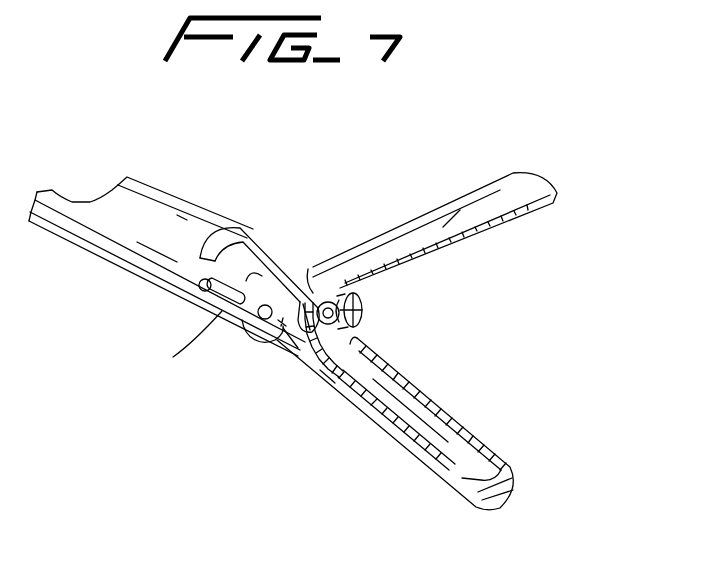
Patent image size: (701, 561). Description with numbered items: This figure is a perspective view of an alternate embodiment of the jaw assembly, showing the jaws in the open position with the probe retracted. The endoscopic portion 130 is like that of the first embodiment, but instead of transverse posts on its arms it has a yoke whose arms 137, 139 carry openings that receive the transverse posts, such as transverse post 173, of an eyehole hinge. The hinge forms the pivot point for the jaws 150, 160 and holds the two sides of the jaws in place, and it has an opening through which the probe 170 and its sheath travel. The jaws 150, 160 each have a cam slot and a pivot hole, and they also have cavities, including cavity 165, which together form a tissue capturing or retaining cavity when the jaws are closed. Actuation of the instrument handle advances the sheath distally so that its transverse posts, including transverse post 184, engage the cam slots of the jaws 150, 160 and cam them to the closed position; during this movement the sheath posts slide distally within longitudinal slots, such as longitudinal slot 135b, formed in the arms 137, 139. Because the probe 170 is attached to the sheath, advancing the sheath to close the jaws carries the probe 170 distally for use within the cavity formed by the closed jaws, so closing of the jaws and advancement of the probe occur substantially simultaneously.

The endoscopic portion 130 is at (188, 210).
The arm 137 is at (290, 255).
The jaw 150 is at (483, 197).
The probe 170 is at (348, 306).
The transverse post 184 is at (196, 300).
The longitudinal slot 135b is at (217, 318).
The transverse post 173 is at (242, 324).
The arm 139 is at (279, 345).
The cavity 165 is at (440, 420).
The jaw 160 is at (417, 457).